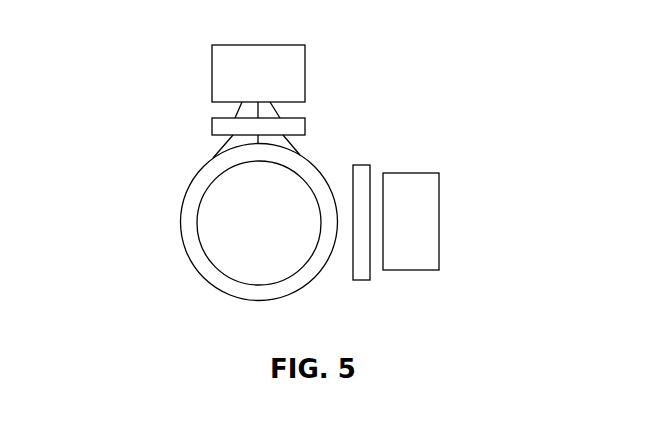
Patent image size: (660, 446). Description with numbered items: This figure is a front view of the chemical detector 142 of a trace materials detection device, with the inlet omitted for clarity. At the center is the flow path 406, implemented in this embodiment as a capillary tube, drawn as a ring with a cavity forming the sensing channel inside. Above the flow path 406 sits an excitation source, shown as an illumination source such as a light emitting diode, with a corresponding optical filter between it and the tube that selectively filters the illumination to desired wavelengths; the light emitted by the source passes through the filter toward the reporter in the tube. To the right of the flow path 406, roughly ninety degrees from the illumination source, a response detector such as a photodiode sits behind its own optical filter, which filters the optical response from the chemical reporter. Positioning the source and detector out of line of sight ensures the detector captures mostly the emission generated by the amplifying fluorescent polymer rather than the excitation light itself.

The chemical detector 142 is at (172, 149).
The flow path 406 is at (197, 267).